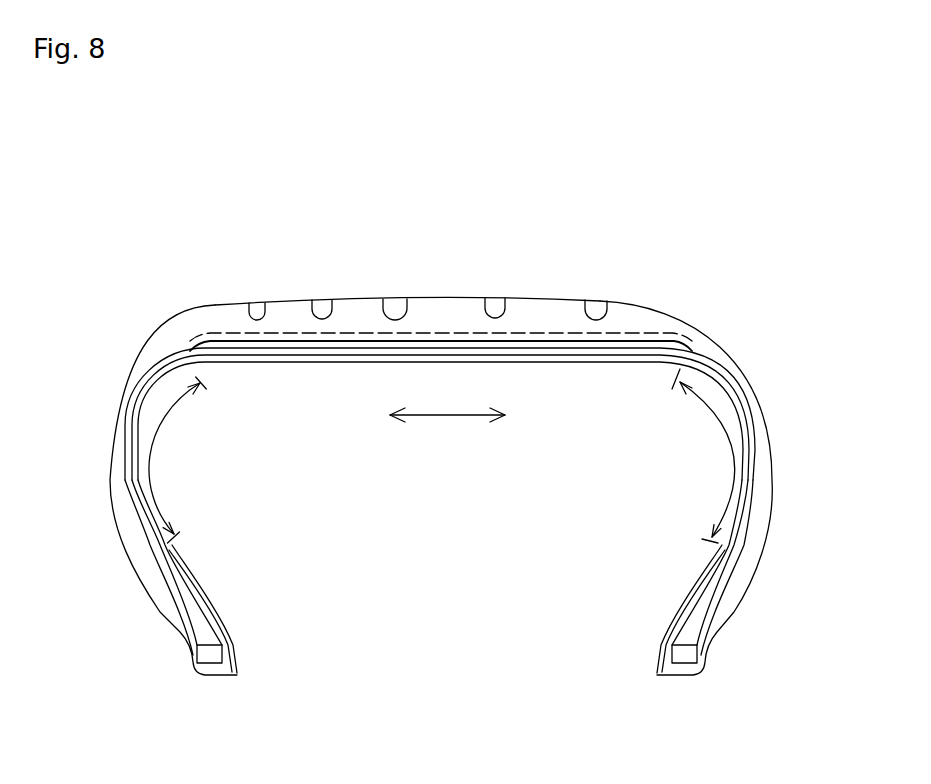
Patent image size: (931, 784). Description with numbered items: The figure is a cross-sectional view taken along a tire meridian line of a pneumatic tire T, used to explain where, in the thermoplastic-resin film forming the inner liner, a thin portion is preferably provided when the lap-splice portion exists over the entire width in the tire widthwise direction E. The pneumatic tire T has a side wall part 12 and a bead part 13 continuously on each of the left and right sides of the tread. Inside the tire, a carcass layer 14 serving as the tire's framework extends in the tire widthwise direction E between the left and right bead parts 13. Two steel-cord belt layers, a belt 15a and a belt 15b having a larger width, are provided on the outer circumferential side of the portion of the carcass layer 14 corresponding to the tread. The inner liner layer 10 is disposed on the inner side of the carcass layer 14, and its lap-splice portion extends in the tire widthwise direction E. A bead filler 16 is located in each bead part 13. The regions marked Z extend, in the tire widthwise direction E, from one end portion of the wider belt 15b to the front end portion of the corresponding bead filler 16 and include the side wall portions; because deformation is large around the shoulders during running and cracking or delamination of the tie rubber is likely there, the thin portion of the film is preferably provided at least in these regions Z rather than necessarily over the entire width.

The inner liner layer 10 is at (293, 363).
The side wall part 12 is at (118, 442).
The bead part 13 is at (180, 632).
The carcass layer 14 is at (630, 352).
The belt layer 15a is at (525, 340).
The belt having a larger width 15b is at (567, 347).
The bead filler 16 is at (205, 620).
The pneumatic tire T is at (448, 297).
The tire widthwise direction E is at (447, 417).
The region where the thin portion is preferably provided Z is at (152, 453).